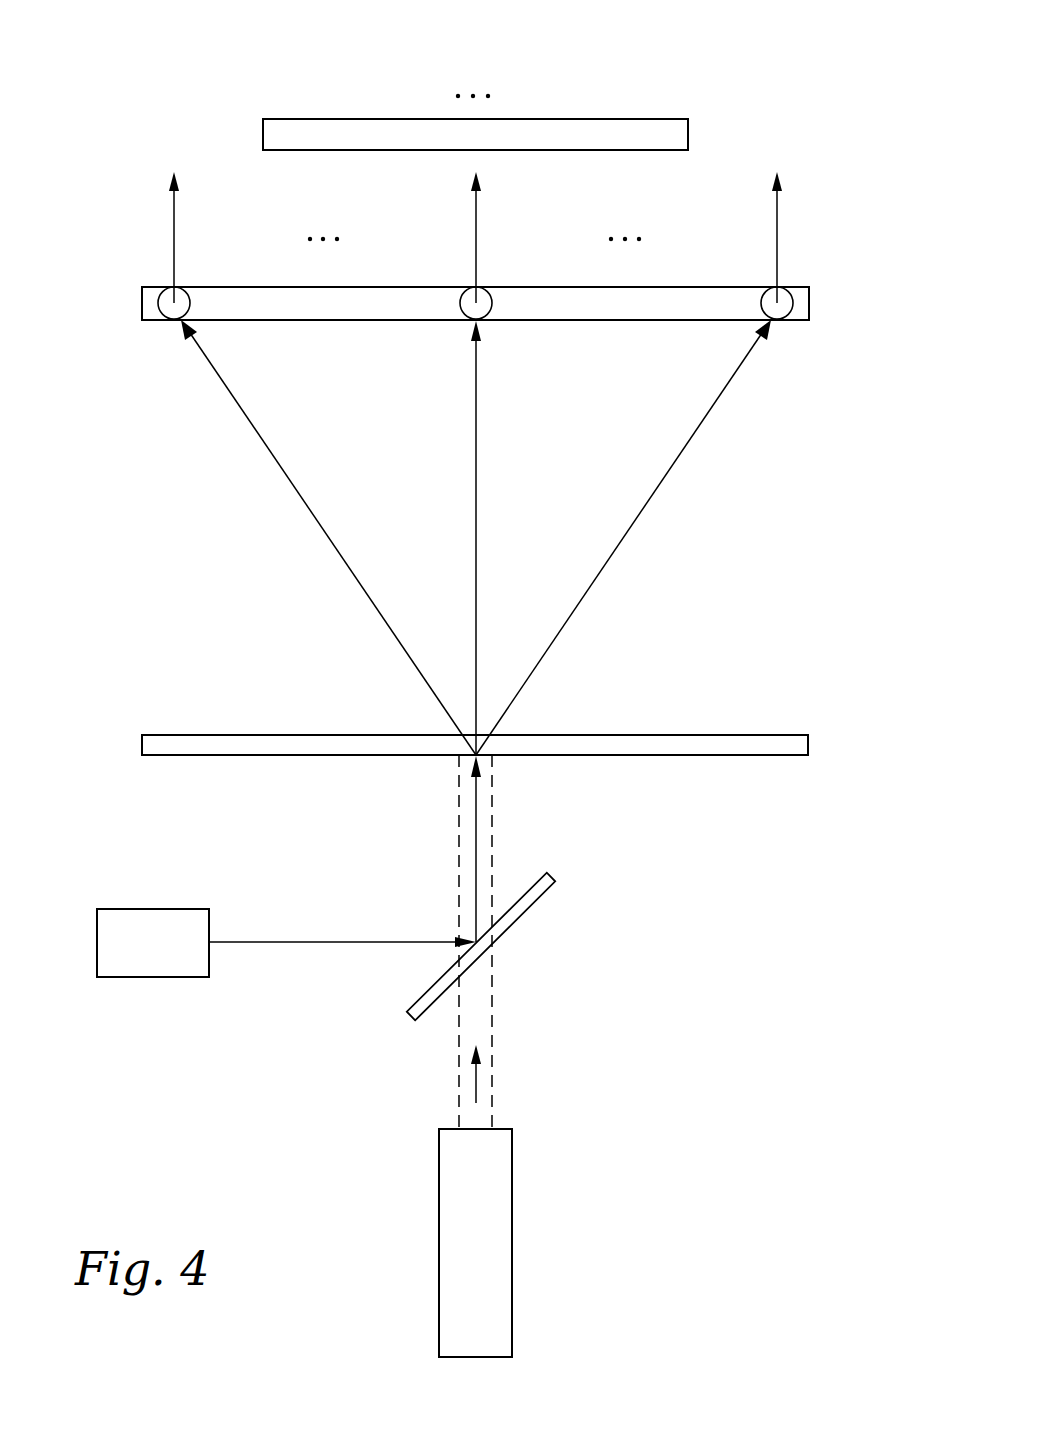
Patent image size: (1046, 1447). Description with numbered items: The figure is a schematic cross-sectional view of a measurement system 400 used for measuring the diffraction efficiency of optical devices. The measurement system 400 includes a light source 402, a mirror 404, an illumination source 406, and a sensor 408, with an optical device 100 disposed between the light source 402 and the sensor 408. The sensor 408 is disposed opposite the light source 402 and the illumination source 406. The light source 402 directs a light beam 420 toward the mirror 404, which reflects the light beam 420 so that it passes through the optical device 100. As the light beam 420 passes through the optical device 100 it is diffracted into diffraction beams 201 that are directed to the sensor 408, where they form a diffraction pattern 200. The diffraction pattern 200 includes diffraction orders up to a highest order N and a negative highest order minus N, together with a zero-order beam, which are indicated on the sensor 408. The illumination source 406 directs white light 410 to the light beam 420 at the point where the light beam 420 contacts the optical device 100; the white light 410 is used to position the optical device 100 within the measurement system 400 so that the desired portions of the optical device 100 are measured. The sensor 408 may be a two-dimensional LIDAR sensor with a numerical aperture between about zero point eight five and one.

The measurement system 400 is at (140, 30).
The diffraction pattern 200 is at (689, 130).
The sensor 408 is at (810, 300).
The diffraction beams 201 is at (660, 569).
The optical device 100 is at (809, 743).
The white light 410 is at (493, 1012).
The light source 402 is at (153, 943).
The light beam 420 is at (313, 942).
The mirror 404 is at (555, 880).
The illumination source 406 is at (512, 1221).